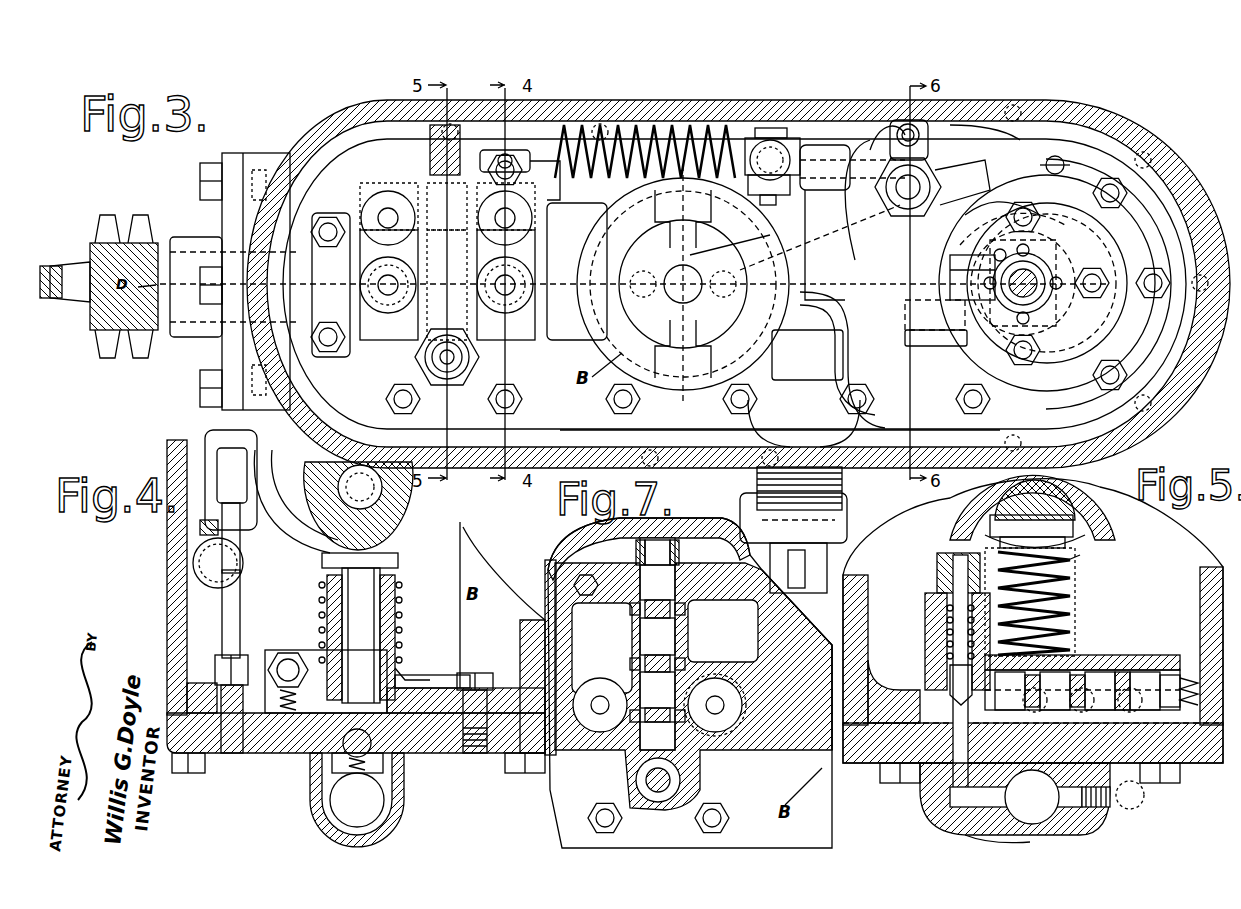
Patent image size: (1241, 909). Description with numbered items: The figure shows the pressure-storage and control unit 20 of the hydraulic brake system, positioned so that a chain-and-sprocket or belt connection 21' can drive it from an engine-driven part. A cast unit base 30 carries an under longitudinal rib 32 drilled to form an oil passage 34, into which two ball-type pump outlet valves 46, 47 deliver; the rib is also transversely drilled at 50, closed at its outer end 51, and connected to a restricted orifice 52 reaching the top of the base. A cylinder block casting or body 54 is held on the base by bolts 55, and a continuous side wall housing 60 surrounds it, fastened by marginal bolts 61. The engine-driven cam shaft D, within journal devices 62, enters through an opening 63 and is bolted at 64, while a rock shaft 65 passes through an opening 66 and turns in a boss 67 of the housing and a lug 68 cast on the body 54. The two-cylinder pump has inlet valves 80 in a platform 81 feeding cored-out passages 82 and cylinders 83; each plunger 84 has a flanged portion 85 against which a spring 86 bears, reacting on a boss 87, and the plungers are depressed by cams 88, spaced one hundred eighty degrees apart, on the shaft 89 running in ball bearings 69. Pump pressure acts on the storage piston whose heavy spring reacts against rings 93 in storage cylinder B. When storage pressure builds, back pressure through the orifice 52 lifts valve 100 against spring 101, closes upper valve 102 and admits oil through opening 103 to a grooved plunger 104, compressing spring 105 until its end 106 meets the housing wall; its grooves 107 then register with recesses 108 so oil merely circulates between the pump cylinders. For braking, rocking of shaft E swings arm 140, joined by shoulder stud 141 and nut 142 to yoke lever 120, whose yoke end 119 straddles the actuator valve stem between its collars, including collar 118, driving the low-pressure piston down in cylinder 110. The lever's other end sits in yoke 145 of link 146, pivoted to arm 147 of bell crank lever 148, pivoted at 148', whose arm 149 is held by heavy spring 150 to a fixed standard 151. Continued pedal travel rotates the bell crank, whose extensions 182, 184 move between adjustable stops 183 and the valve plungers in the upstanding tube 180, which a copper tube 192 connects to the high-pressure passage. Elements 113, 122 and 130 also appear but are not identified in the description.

In FIG. 3, the unit 20 is at (1196, 198).
In FIG. 3, the chain and sprocket or belt connection 21' is at (124, 267).
In FIG. 4, the unit base 30 is at (270, 760).
In FIG. 5, the unit base 30 is at (1213, 752).
In FIG. 4, the longitudinal rib 32 is at (318, 820).
In FIG. 5, the longitudinal rib 32 is at (1060, 838).
In FIG. 4, the oil passage 34 is at (376, 806).
In FIG. 5, the oil passage 34 is at (1032, 797).
In FIG. 7, the pump outlet valve 46 is at (598, 708).
In FIG. 4, the pump outlet valve 47 is at (370, 752).
In FIG. 7, the pump outlet valve 47 is at (720, 716).
In FIG. 5, the transverse drilling 50 is at (972, 802).
In FIG. 5, the closed outer end 51 is at (1108, 806).
In FIG. 5, the restricted orifice 52 is at (957, 780).
In FIG. 3, the cylinder block casting 54 is at (667, 418).
In FIG. 4, the cylinder block casting 54 is at (442, 688).
In FIG. 7, the cylinder block casting 54 is at (790, 745).
In FIG. 5, the cylinder block casting 54 is at (905, 698).
In FIG. 3, the bolts 55 is at (605, 400).
In FIG. 4, the bolts 55 is at (475, 760).
In FIG. 7, the bolts 55 is at (710, 820).
In FIG. 4, the side wall housing 60 is at (167, 470).
In FIG. 7, the side wall housing 60 is at (588, 542).
In FIG. 5, the side wall housing 60 is at (850, 594).
In FIG. 5, the marginal bolts 61 is at (900, 773).
In FIG. 3, the journal devices 62 is at (222, 347).
In FIG. 3, the opening 63 is at (258, 170).
In FIG. 3, the bolts 64 is at (210, 268).
In FIG. 3, the rock shaft 65 is at (822, 555).
In FIG. 3, the opening 66 is at (742, 438).
In FIG. 3, the boss 67 is at (785, 440).
In FIG. 3, the lug 68 is at (832, 362).
In FIG. 4, the ball bearings 69 is at (303, 472).
In FIG. 5, the ball bearings 69 is at (1075, 522).
In FIG. 3, the inlet valves 80 is at (503, 214).
In FIG. 4, the inlet valves 80 is at (289, 664).
In FIG. 5, the inlet valves 80 is at (1118, 672).
In FIG. 4, the platform 81 is at (400, 682).
In FIG. 4, the cored out passages 82 is at (550, 602).
In FIG. 7, the cored out passages 82 is at (740, 615).
In FIG. 4, the cylinders 83 is at (395, 600).
In FIG. 5, the cylinders 83 is at (1075, 600).
In FIG. 4, the plunger 84 is at (342, 604).
In FIG. 5, the plunger 84 is at (1062, 578).
In FIG. 4, the upper flanged portions 85 is at (322, 557).
In FIG. 5, the upper flanged portions 85 is at (1002, 522).
In FIG. 4, the springs 86 is at (399, 582).
In FIG. 5, the springs 86 is at (1084, 551).
In FIG. 4, the bosses 87 is at (398, 650).
In FIG. 3, the cams 88 is at (372, 342).
In FIG. 4, the cams 88 is at (385, 515).
In FIG. 5, the cams 88 is at (1068, 500).
In FIG. 3, the engine-driven shaft 89 is at (424, 330).
In FIG. 4, the engine-driven shaft 89 is at (388, 505).
In FIG. 5, the engine-driven shaft 89 is at (992, 493).
In FIG. 3, the rings 93 is at (683, 228).
In FIG. 7, the valve 100 is at (682, 778).
In FIG. 5, the valve 100 is at (958, 690).
In FIG. 5, the spring 101 is at (948, 642).
In FIG. 3, the upper valve 102 is at (449, 380).
In FIG. 5, the upper valve 102 is at (950, 613).
In FIG. 5, the opening 103 is at (1050, 626).
In FIG. 7, the grooved plunger 104 is at (612, 760).
In FIG. 5, the grooved plunger 104 is at (1060, 680).
In FIG. 3, the spring 105 is at (448, 125).
In FIG. 7, the spring 105 is at (640, 552).
In FIG. 5, the spring 105 is at (1190, 676).
In FIG. 7, the end 106 is at (660, 545).
In FIG. 5, the end 106 is at (1165, 675).
In FIG. 7, the grooves 107 is at (668, 605).
In FIG. 5, the grooves 107 is at (1030, 670).
In FIG. 7, the recesses 108 is at (640, 612).
In FIG. 5, the recesses 108 is at (1086, 748).
In FIG. 3, the cylinder 110 is at (1096, 347).
In FIG. 3, the plate 113 is at (1085, 318).
In FIG. 3, the collar 118 is at (1047, 279).
In FIG. 3, the yoke end 119 is at (1040, 255).
In FIG. 3, the yoke lever 120 is at (807, 355).
In FIG. 3, the shaft 122 is at (755, 298).
In FIG. 3, the pin 130 is at (1020, 248).
In FIG. 3, the arm 140 is at (843, 360).
In FIG. 3, the shoulder stud 141 is at (936, 349).
In FIG. 3, the nut 142 is at (965, 255).
In FIG. 3, the yoke 145 is at (792, 175).
In FIG. 3, the link 146 is at (776, 140).
In FIG. 4, the link 146 is at (224, 448).
In FIG. 3, the arm 147 is at (770, 128).
In FIG. 4, the arm 147 is at (224, 486).
In FIG. 3, the bell crank lever 148 is at (932, 150).
In FIG. 3, the pivot 148' is at (891, 108).
In FIG. 3, the arm 149 is at (795, 237).
In FIG. 4, the arm 149 is at (238, 533).
In FIG. 3, the tensile spring 150 is at (625, 130).
In FIG. 4, the tensile spring 150 is at (195, 575).
In FIG. 3, the fixed standard 151 is at (512, 160).
In FIG. 4, the fixed standard 151 is at (222, 612).
In FIG. 3, the upstanding tube 180 is at (815, 196).
In FIG. 3, the lateral extension 182 is at (965, 118).
In FIG. 3, the adjustable stops 183 is at (932, 140).
In FIG. 4, the adjustable stops 183 is at (200, 528).
In FIG. 3, the lateral extension 184 is at (1012, 213).
In FIG. 3, the copper tube 192 is at (1070, 166).